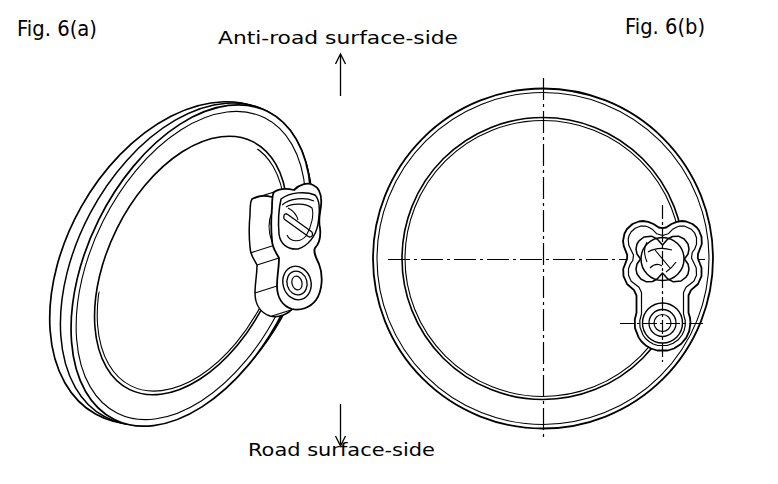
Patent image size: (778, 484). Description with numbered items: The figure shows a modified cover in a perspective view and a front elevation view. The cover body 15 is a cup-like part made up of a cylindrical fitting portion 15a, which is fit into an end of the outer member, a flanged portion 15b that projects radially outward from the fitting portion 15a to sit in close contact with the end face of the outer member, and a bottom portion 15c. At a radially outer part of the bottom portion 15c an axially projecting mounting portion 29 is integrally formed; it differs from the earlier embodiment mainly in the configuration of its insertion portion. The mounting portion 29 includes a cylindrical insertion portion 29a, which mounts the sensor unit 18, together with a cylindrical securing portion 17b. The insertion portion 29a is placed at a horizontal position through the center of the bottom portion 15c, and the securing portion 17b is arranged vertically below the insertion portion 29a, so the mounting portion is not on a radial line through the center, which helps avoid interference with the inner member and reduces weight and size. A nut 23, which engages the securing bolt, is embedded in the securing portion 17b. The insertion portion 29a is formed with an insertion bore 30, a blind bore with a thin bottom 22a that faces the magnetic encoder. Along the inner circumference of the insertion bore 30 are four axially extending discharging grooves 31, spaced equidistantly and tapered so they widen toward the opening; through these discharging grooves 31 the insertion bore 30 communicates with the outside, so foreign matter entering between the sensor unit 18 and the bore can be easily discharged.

In FIG. 6A, the cover body 15 is at (183, 102).
In FIG. 6B, the cover body 15 is at (640, 108).
In FIG. 6A, the fitting portion 15a is at (152, 134).
In FIG. 6A, the flanged portion 15b is at (233, 106).
In FIG. 6B, the flanged portion 15b is at (446, 130).
In FIG. 6A, the bottom portion 15c is at (190, 372).
In FIG. 6B, the bottom portion 15c is at (516, 378).
In FIG. 6A, the securing portion 17b is at (253, 284).
In FIG. 6B, the securing portion 17b is at (637, 336).
In FIG. 6B, the sensor unit 18 is at (625, 243).
In FIG. 6B, the bottom 22a is at (661, 221).
In FIG. 6A, the nut 23 is at (299, 312).
In FIG. 6B, the nut 23 is at (682, 336).
In FIG. 6A, the mounting portion 29 is at (319, 186).
In FIG. 6B, the mounting portion 29 is at (695, 220).
In FIG. 6A, the insertion portion 29a is at (266, 222).
In FIG. 6B, the insertion portion 29a is at (630, 232).
In FIG. 6A, the insertion bore 30 is at (284, 208).
In FIG. 6B, the insertion bore 30 is at (646, 263).
In FIG. 6A, the discharging grooves 31 is at (320, 227).
In FIG. 6B, the discharging grooves 31 is at (641, 276).